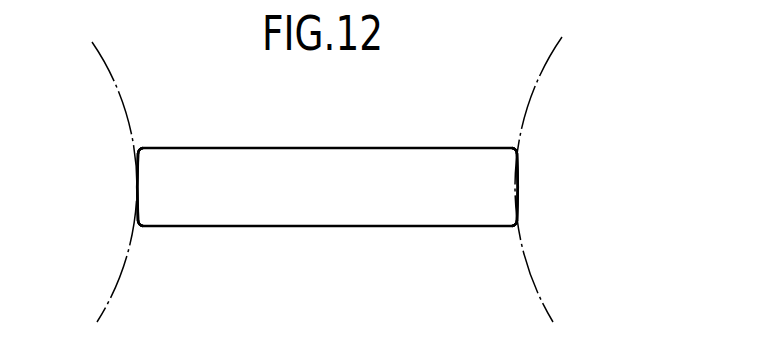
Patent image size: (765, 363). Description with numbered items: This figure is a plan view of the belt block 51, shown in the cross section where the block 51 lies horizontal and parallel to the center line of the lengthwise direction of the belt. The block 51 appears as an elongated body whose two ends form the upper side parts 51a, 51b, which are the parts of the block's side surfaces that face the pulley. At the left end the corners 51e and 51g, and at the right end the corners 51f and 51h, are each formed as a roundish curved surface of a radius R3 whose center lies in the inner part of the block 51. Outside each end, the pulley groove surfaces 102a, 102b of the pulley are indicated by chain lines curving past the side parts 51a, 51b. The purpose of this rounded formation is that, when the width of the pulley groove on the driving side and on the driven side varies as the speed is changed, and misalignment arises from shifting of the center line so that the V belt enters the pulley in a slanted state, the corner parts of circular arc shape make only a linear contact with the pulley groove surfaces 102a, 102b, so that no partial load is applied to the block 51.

The block 51 is at (351, 148).
The upper side part 51a is at (136, 187).
The upper side part 51b is at (519, 188).
The corner 51e is at (141, 150).
The corner 51f is at (515, 150).
The corner 51g is at (139, 228).
The corner 51h is at (513, 228).
The pulley groove surface 102a is at (112, 68).
The pulley groove surface 102b is at (545, 62).
The radius R3 is at (145, 152).